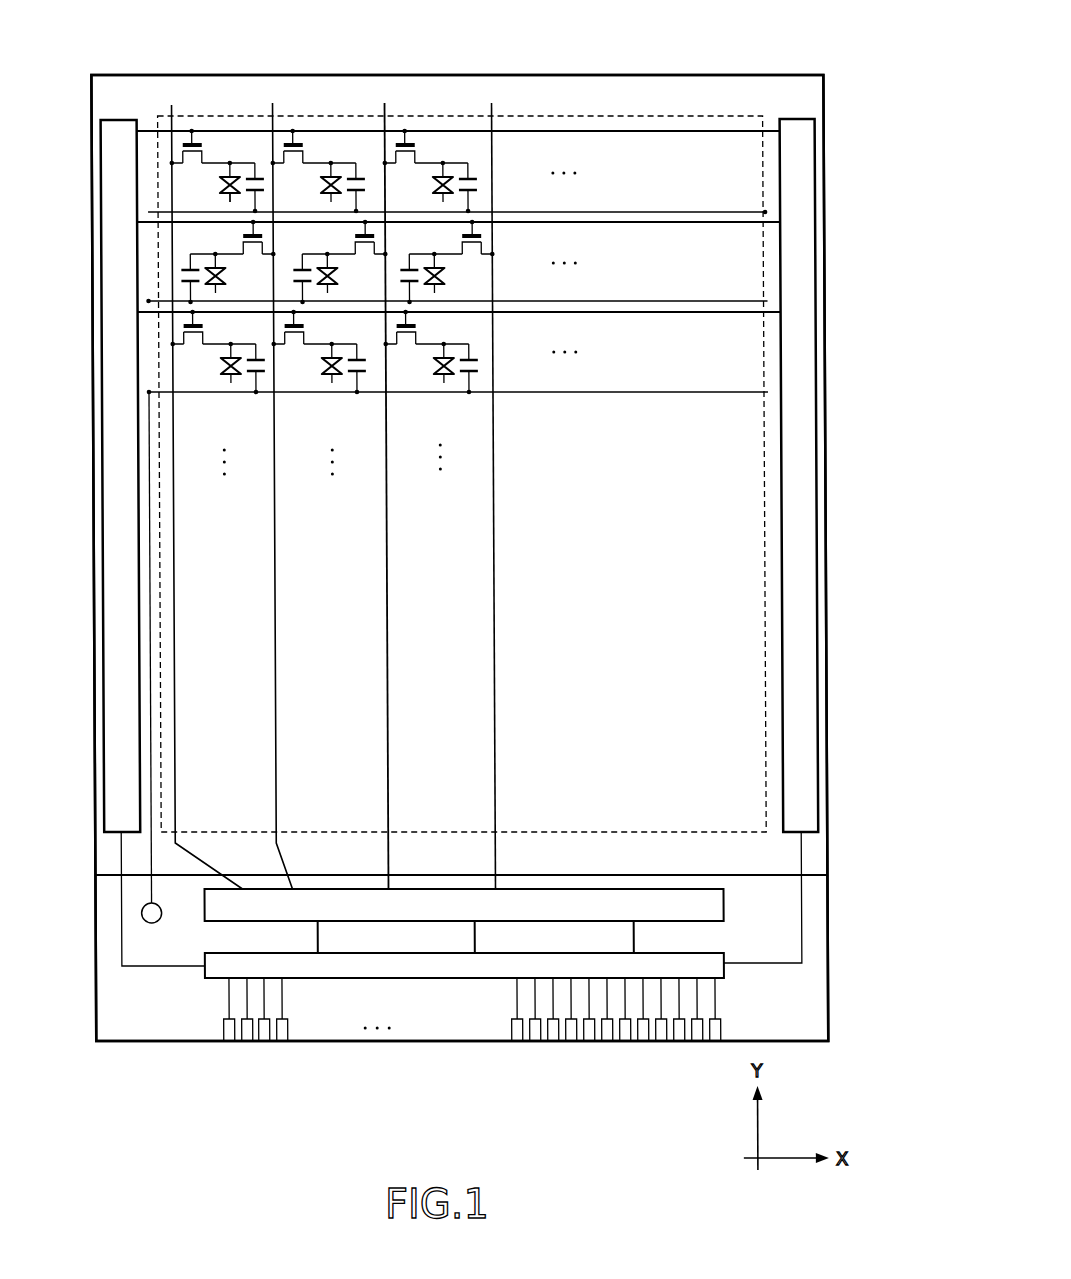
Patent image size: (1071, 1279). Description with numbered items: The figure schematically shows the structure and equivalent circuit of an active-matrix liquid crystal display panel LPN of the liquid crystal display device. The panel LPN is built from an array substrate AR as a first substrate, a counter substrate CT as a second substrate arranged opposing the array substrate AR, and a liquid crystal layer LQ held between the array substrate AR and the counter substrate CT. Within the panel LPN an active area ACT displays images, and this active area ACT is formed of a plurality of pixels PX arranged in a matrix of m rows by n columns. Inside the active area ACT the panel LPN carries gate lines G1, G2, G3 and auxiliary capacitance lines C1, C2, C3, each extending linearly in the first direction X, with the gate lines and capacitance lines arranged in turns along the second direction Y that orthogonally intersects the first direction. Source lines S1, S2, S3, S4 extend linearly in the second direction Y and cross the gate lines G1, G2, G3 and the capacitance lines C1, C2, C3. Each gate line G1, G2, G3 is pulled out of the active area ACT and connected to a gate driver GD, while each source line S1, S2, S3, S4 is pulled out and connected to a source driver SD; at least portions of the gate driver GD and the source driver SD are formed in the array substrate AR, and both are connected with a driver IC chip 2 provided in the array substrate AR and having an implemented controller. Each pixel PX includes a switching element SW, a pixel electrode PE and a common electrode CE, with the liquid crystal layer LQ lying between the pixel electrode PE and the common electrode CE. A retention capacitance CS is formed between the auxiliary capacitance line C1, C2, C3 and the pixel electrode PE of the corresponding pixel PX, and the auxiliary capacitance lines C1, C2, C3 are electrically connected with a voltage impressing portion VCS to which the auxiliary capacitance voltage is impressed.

The liquid crystal display panel LPN is at (725, 56).
The array substrate AR is at (825, 960).
The counter substrate CT is at (825, 860).
The active area ACT is at (537, 115).
The gate driver GD is at (121, 128).
The gate line G1 is at (632, 132).
The gate line G2 is at (632, 223).
The gate line G3 is at (632, 313).
The auxiliary capacitance line C1 is at (692, 213).
The auxiliary capacitance line C2 is at (694, 302).
The auxiliary capacitance line C3 is at (693, 393).
The source line S1 is at (172, 583).
The source line S2 is at (273, 583).
The source line S3 is at (385, 583).
The source line S4 is at (492, 583).
The switching element SW is at (188, 128).
The pixel electrode PE is at (226, 176).
The liquid crystal layer LQ is at (219, 185).
The common electrode CE is at (228, 200).
The retention capacitance CS is at (262, 168).
The pixel PX is at (247, 108).
The voltage impressing portion VCS is at (152, 924).
The source driver SD is at (719, 903).
The driver IC chip 2 is at (719, 957).